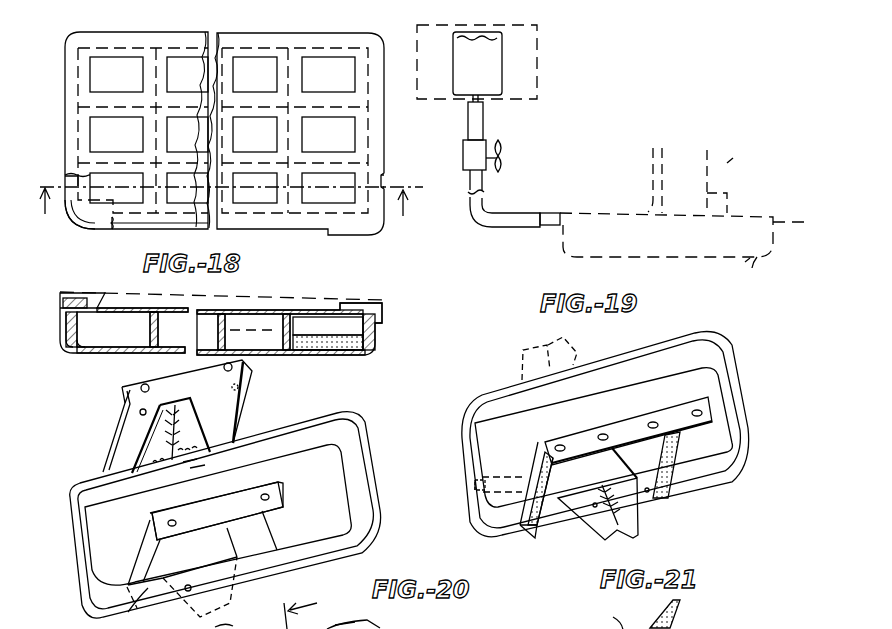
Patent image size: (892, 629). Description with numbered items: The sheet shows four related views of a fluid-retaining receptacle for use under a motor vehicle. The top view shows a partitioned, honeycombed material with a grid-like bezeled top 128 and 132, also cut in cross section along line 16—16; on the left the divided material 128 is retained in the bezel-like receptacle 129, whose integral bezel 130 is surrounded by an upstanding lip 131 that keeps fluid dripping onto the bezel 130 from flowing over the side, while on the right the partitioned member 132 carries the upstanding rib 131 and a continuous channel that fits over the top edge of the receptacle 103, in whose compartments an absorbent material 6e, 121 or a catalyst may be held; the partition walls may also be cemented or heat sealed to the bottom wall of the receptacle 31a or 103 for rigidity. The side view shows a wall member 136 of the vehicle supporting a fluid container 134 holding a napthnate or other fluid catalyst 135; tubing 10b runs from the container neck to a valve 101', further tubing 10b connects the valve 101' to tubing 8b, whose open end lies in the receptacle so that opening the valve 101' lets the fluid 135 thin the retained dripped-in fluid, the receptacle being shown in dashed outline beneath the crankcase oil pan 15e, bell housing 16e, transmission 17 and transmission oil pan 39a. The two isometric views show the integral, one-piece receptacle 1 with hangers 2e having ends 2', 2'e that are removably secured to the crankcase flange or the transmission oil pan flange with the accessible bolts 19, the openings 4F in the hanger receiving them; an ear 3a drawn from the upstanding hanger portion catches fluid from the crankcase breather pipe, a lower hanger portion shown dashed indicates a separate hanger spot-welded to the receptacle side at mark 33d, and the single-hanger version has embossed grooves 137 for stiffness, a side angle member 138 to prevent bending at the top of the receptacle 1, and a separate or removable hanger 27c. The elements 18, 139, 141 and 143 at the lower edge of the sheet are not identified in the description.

In FIG. 20, the receptacle 1 is at (383, 468).
In FIG. 21, the receptacle 1 is at (747, 408).
In FIG. 20, the hanger 2e is at (132, 432).
In FIG. 21, the hanger 2e is at (537, 468).
In FIG. 20, the hanger end 2' is at (141, 376).
In FIG. 20, the hanger end 2'e is at (237, 505).
In FIG. 21, the hanger end 2'e is at (628, 423).
In FIG. 20, the ear 3a is at (180, 433).
In FIG. 21, the ear 3a is at (565, 353).
In FIG. 20, the openings 4F is at (145, 388).
In FIG. 21, the openings 4F is at (562, 444).
In FIG. 18, the material 6e is at (345, 348).
In FIG. 19, the tubing 8b is at (547, 227).
In FIG. 19, the tubing 10b is at (480, 117).
In FIG. 19, the crankcase oil pan 15e is at (583, 205).
In FIG. 19, the bell housing 16e is at (683, 200).
In FIG. 18, the section line 16 is at (227, 191).
In FIG. 19, the transmission 17 is at (743, 156).
In FIG. 20, the member 18 is at (236, 621).
In FIG. 20, the bolts 19 is at (312, 612).
In FIG. 21, the removable hanger 27c is at (675, 474).
In FIG. 18, the receptacle 31a is at (380, 347).
In FIG. 19, the receptacle 31a is at (745, 267).
In FIG. 21, the spot welding mark 33d is at (660, 502).
In FIG. 19, the transmission oil pan 39a is at (748, 205).
In FIG. 19, the valve 101' is at (511, 151).
In FIG. 18, the receptacle 103 is at (369, 345).
In FIG. 19, the receptacle 103 is at (767, 282).
In FIG. 18, the material 121 is at (322, 348).
In FIG. 18, the partitioned material 128 is at (100, 38).
In FIG. 18, the receptacle 129 is at (60, 308).
In FIG. 18, the bezel 130 is at (70, 176).
In FIG. 18, the upstanding lip 131 is at (384, 177).
In FIG. 18, the partitioned member 132 is at (263, 43).
In FIG. 19, the fluid container 134 is at (537, 79).
In FIG. 19, the fluid catalyst 135 is at (537, 52).
In FIG. 19, the wall member 136 is at (537, 34).
In FIG. 21, the embossed grooves 137 is at (547, 535).
In FIG. 21, the side angle member 138 is at (497, 485).
In FIG. 20, the member 139 is at (353, 612).
In FIG. 20, the member 141 is at (369, 621).
In FIG. 21, the member 141 is at (600, 620).
In FIG. 20, the member 143 is at (157, 608).